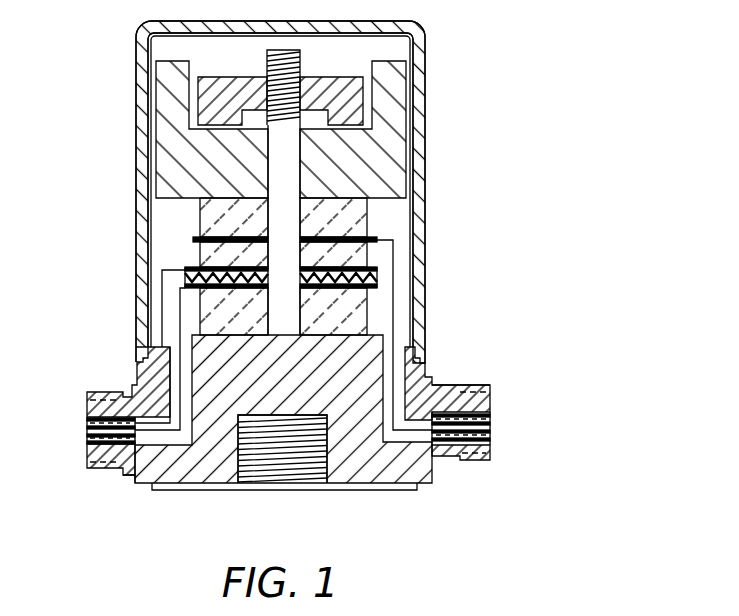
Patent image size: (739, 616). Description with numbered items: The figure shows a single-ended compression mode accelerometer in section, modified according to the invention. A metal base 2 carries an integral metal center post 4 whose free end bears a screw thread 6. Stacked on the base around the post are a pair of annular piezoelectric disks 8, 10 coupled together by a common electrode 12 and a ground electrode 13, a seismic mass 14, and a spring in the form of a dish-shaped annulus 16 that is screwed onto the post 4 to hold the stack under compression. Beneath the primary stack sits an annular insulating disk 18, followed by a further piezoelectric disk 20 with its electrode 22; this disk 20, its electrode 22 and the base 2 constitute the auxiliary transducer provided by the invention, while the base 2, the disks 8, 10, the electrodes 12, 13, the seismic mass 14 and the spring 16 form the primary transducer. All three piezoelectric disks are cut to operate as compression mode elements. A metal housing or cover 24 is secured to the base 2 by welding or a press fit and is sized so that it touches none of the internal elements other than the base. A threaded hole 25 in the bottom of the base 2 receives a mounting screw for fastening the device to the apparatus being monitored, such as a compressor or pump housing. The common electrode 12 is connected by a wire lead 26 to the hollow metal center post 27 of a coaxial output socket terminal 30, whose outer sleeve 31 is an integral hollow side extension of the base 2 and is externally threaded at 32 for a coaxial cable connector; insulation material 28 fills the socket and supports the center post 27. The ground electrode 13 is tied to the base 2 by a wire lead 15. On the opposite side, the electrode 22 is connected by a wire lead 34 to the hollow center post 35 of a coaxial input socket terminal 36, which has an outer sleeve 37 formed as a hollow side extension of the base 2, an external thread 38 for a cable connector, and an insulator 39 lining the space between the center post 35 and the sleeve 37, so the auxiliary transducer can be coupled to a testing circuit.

The metal base 2 is at (180, 492).
The metal center post 4 is at (284, 161).
The screw thread 6 is at (292, 49).
The annular piezoelectric disk 8 is at (208, 209).
The annular piezoelectric disk 10 is at (208, 253).
The common electrode 12 is at (200, 239).
The ground electrode 13 is at (380, 262).
The seismic mass 14 is at (167, 93).
The wire lead 15 is at (183, 272).
The dish-shaped annulus spring 16 is at (348, 78).
The annular insulating disk 18 is at (374, 278).
The piezoelectric disk 20 is at (368, 316).
The electrode 22 is at (372, 292).
The metal housing or cover 24 is at (134, 66).
The threaded hole 25 is at (320, 440).
The wire lead 26 is at (380, 240).
The hollow metal center post 27 is at (491, 427).
The insulation material 28 is at (491, 439).
The coaxial output socket terminal 30 is at (493, 399).
The outer sleeve 31 is at (472, 455).
The external thread 32 is at (476, 383).
The wire lead 34 is at (160, 301).
The hollow center post 35 is at (88, 420).
The coaxial input socket terminal 36 is at (95, 388).
The outer sleeve 37 is at (88, 456).
The external thread 38 is at (106, 472).
The insulator 39 is at (88, 436).